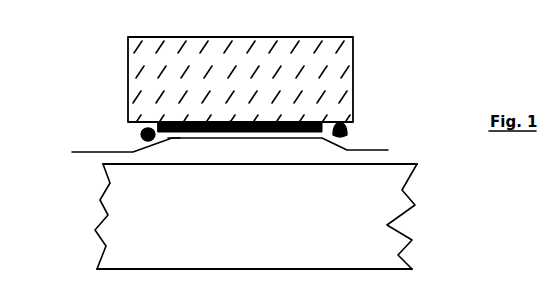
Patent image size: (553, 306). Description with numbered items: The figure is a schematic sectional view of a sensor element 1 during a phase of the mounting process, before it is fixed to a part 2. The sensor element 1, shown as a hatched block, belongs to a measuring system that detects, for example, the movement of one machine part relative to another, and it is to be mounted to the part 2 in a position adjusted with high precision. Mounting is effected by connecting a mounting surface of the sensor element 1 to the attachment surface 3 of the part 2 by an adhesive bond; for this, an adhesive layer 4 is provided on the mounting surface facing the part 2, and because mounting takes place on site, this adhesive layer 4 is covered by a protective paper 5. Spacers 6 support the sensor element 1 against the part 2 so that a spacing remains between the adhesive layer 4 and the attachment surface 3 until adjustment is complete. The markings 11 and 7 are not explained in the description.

The sensor element 1 is at (354, 49).
The component interior 11 is at (231, 122).
The intermediate layer 7 is at (238, 129).
The spacers 6 is at (142, 127).
The adhesive layer 4 is at (118, 151).
The protective paper 5 is at (289, 151).
The part 2 is at (123, 218).
The attachment surface 3 is at (272, 164).